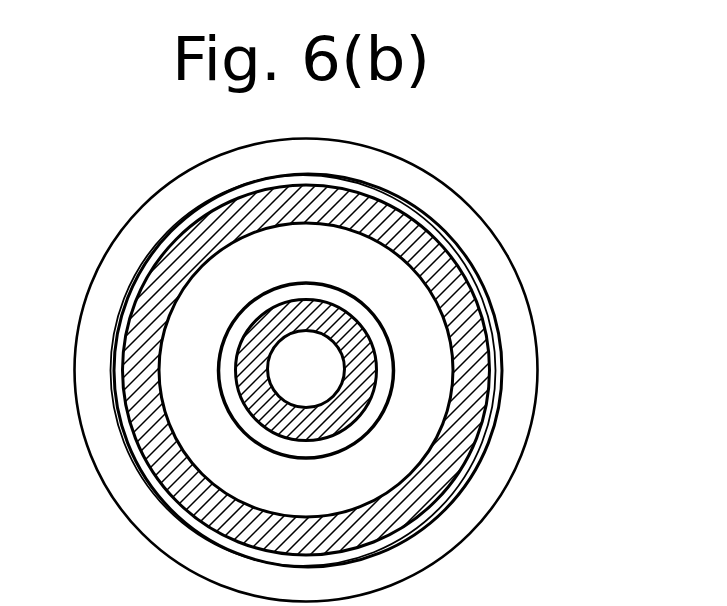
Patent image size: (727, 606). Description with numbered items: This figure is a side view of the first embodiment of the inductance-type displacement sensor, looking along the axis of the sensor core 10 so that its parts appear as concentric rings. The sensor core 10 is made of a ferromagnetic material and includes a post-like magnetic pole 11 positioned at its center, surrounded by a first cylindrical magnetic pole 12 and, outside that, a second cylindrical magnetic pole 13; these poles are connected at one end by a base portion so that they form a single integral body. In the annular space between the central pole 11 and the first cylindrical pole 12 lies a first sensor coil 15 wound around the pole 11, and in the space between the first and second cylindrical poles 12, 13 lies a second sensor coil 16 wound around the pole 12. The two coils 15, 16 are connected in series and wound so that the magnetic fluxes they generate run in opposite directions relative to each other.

The sensor core 10 is at (182, 167).
The post-like magnetic pole 11 is at (315, 352).
The first cylindrical magnetic pole 12 is at (420, 292).
The second cylindrical magnetic pole 13 is at (372, 154).
The first sensor coil 15 is at (382, 369).
The second sensor coil 16 is at (450, 264).